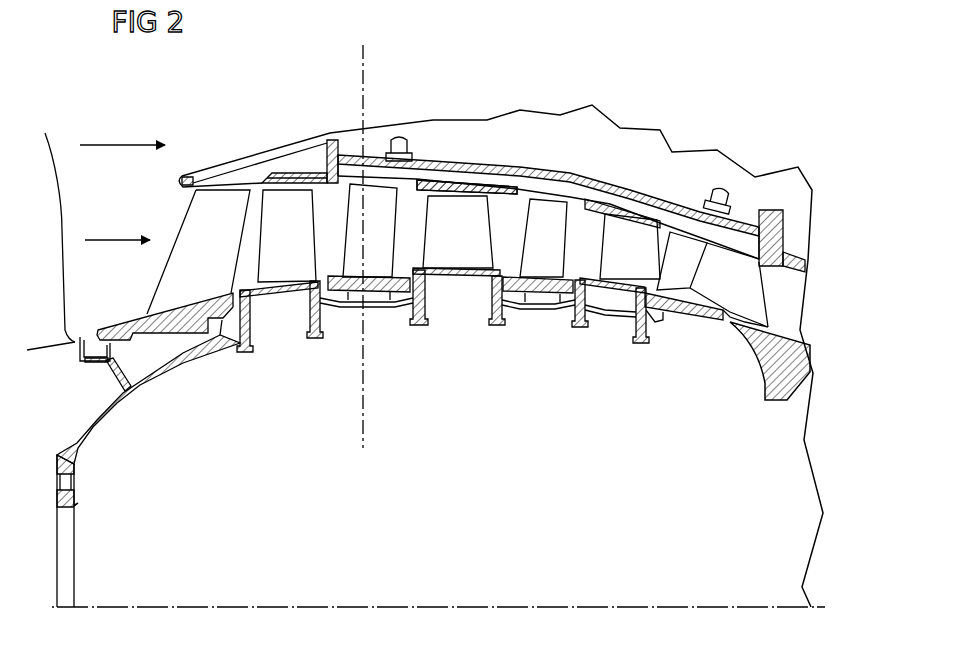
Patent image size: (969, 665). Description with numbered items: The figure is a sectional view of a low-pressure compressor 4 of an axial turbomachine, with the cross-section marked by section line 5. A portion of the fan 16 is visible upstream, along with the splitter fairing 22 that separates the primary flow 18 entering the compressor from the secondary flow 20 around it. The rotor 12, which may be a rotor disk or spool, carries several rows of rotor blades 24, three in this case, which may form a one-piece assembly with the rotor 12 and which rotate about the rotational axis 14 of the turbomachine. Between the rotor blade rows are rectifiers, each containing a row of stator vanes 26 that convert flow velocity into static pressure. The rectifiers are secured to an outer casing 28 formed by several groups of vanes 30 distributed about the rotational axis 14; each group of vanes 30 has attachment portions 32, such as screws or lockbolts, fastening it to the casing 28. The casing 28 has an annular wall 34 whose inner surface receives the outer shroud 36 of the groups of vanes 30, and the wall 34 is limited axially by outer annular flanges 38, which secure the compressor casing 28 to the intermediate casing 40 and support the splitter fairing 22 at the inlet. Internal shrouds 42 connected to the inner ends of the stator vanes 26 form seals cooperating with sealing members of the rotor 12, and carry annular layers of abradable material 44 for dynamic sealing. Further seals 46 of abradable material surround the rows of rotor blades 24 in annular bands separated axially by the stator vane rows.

The low-pressure compressor 4 is at (682, 104).
The section line 5 is at (361, 68).
The rotor 12 is at (76, 472).
The rotational axis 14 is at (524, 607).
The fan 16 is at (26, 253).
The primary flow 18 is at (117, 224).
The secondary flow 20 is at (122, 129).
The splitter fairing 22 is at (183, 184).
The rotor blades 24 is at (273, 244).
The stator vanes 26 is at (187, 257).
The outer casing 28 is at (552, 158).
The groups of vanes 30 is at (345, 213).
The attachment portions 32 is at (400, 137).
The annular wall 34 is at (590, 178).
The outer shroud 36 is at (513, 180).
The outer annular flanges 38 is at (334, 140).
The intermediate casing 40 is at (777, 400).
The internal shrouds 42 is at (713, 318).
The annular layers of abradable material 44 is at (387, 298).
The seals 46 is at (425, 187).